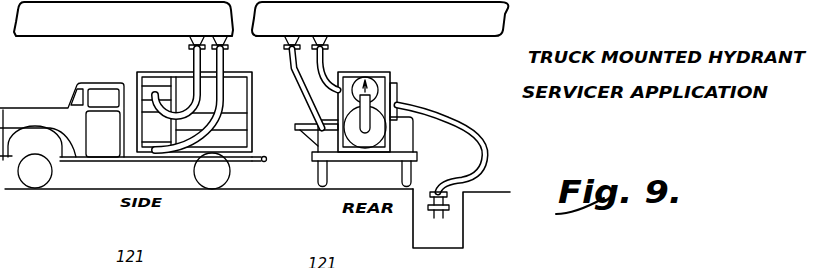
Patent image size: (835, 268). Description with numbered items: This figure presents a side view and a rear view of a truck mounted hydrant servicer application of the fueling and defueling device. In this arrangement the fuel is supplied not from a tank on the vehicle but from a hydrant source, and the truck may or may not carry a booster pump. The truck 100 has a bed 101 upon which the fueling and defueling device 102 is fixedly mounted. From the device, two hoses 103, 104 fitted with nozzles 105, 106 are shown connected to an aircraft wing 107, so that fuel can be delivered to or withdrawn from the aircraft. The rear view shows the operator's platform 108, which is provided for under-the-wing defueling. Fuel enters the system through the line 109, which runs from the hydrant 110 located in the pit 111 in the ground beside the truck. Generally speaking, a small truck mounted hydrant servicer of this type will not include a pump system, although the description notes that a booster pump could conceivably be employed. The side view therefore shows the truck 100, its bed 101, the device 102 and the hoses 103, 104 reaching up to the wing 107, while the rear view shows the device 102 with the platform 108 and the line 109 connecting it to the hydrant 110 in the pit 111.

The truck 100 is at (97, 141).
The bed 101 is at (253, 161).
The fueling and defueling device 102 is at (392, 74).
The hose 103 is at (190, 56).
The hose 104 is at (250, 107).
The nozzle 105 is at (190, 47).
The nozzle 106 is at (229, 47).
The aircraft wing 107 is at (17, 38).
The operator's platform 108 is at (299, 131).
The line 109 is at (462, 127).
The hydrant 110 is at (447, 201).
The pit 111 is at (461, 238).